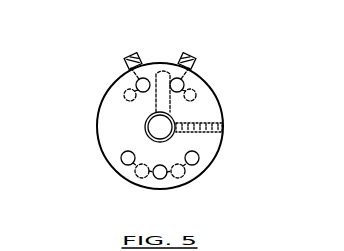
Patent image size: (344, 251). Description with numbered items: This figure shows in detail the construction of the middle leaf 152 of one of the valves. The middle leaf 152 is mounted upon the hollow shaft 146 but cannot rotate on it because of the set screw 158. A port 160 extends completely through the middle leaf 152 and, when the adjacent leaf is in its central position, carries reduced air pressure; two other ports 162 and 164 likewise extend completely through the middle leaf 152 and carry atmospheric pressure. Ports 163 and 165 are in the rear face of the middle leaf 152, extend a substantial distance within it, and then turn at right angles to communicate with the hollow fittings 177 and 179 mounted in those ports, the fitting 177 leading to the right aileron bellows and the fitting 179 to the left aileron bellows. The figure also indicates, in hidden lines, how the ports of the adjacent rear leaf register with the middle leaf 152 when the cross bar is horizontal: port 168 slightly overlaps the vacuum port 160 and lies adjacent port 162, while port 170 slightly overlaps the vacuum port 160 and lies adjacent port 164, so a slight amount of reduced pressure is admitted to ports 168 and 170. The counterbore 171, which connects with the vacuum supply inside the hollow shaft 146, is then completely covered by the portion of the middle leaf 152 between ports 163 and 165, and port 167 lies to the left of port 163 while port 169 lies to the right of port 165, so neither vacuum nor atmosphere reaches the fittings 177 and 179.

The hollow shaft 146 is at (145, 130).
The middle leaf 152 is at (103, 129).
The set screw 158 is at (222, 129).
The port 160 is at (158, 180).
The port 162 is at (121, 160).
The port 163 is at (136, 84).
The port 164 is at (199, 160).
The port 165 is at (184, 84).
The port 167 is at (124, 96).
The port 168 is at (136, 177).
The port 169 is at (196, 97).
The port 170 is at (185, 177).
The counterbore 171 is at (159, 66).
The hollow fitting 177 is at (126, 59).
The hollow fitting 179 is at (195, 59).